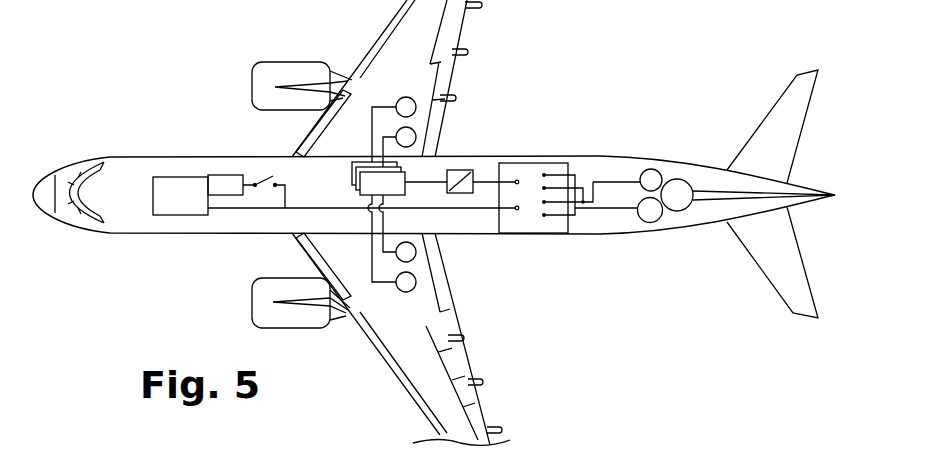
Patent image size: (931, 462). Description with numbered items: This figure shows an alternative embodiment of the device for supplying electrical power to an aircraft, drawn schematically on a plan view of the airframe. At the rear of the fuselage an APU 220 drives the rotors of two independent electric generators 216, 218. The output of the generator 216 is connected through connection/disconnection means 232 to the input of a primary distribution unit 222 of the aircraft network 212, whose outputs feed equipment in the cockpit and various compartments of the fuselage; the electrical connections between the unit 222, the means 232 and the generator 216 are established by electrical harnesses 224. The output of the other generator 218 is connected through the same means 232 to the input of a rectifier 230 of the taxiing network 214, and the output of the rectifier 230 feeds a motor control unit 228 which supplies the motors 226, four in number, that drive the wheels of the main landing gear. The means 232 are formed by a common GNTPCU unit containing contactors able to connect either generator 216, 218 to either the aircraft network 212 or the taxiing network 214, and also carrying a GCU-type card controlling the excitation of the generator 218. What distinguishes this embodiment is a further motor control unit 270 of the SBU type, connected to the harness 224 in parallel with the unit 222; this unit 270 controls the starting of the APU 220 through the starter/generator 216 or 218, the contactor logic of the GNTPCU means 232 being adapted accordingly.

The aircraft network 212 is at (248, 220).
The taxiing network 214 is at (480, 159).
The generator 216 is at (653, 223).
The generator 218 is at (650, 169).
The APU 220 is at (687, 180).
The primary distribution unit 222 is at (172, 187).
The electrical harnesses 224 is at (487, 208).
The motors 226 is at (404, 97).
The motor control unit 228 is at (352, 165).
The rectifier 230 is at (458, 168).
The connection/disconnection means 232 is at (580, 212).
The motor control unit 270 is at (223, 175).